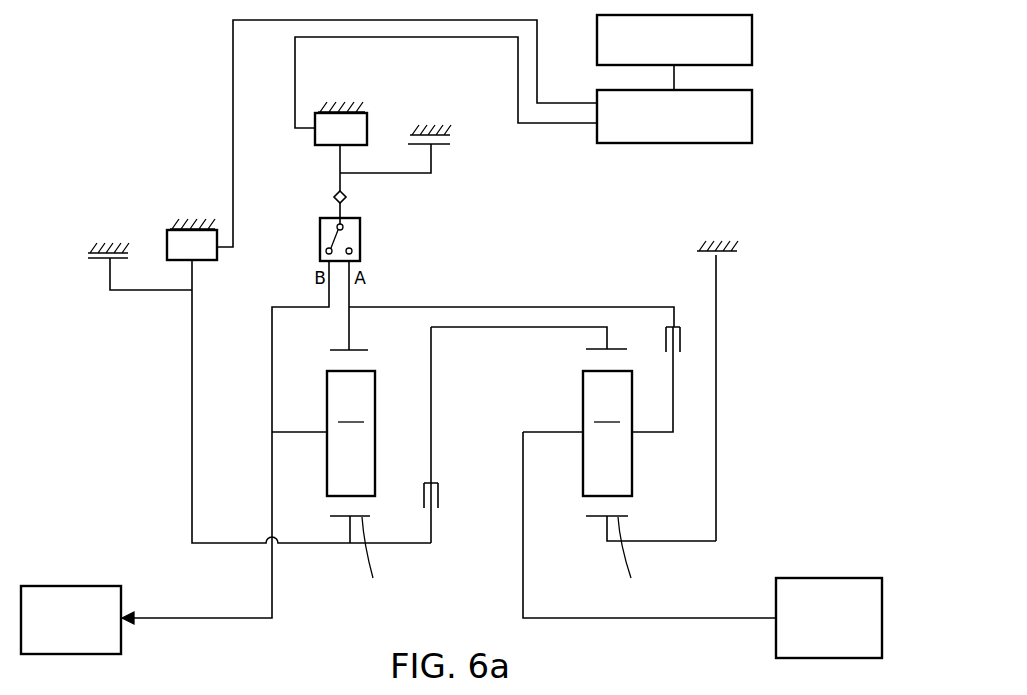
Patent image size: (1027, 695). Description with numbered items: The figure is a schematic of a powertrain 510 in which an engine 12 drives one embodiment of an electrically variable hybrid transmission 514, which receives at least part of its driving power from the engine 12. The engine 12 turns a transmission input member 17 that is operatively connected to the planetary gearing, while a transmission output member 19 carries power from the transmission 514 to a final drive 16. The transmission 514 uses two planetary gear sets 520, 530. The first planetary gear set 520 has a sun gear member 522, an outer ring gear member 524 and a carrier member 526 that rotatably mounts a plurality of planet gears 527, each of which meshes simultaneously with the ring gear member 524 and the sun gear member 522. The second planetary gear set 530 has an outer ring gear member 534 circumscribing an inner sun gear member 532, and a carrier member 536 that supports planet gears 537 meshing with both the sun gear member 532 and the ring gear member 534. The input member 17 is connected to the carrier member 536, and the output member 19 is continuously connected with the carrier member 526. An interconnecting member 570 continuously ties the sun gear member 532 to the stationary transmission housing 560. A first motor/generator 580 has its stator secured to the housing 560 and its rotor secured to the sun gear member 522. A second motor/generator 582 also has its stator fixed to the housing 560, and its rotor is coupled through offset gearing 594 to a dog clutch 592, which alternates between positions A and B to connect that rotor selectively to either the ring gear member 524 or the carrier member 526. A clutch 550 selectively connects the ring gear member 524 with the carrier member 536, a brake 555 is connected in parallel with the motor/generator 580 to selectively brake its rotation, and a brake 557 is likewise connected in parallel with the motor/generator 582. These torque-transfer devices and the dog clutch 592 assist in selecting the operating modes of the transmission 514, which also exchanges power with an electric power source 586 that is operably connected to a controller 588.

The engine 12 is at (810, 562).
The final drive 16 is at (85, 570).
The transmission input member 17 is at (737, 622).
The transmission output member 19 is at (162, 622).
The powertrain 510 is at (120, 380).
The electrically variable transmission 514 is at (509, 265).
The first planetary gear set 520 is at (340, 520).
The sun gear member 522 is at (375, 561).
The ring gear member 524 is at (352, 349).
The carrier member 526 is at (322, 442).
The planet gears 527 is at (351, 433).
The second planetary gear set 530 is at (596, 519).
The sun gear member 532 is at (632, 560).
The ring gear member 534 is at (597, 347).
The carrier member 536 is at (565, 425).
The planet gears 537 is at (607, 433).
The clutch 550 is at (445, 481).
The brake 555 is at (85, 255).
The brake 557 is at (455, 135).
The transmission housing 560 is at (323, 108).
The interconnecting member 570 is at (718, 348).
The first motor/generator 580 is at (158, 222).
The second motor/generator 582 is at (375, 110).
The electric power source 586 is at (752, 43).
The controller 588 is at (752, 117).
The dog clutch 592 is at (318, 243).
The offset gearing 594 is at (325, 198).